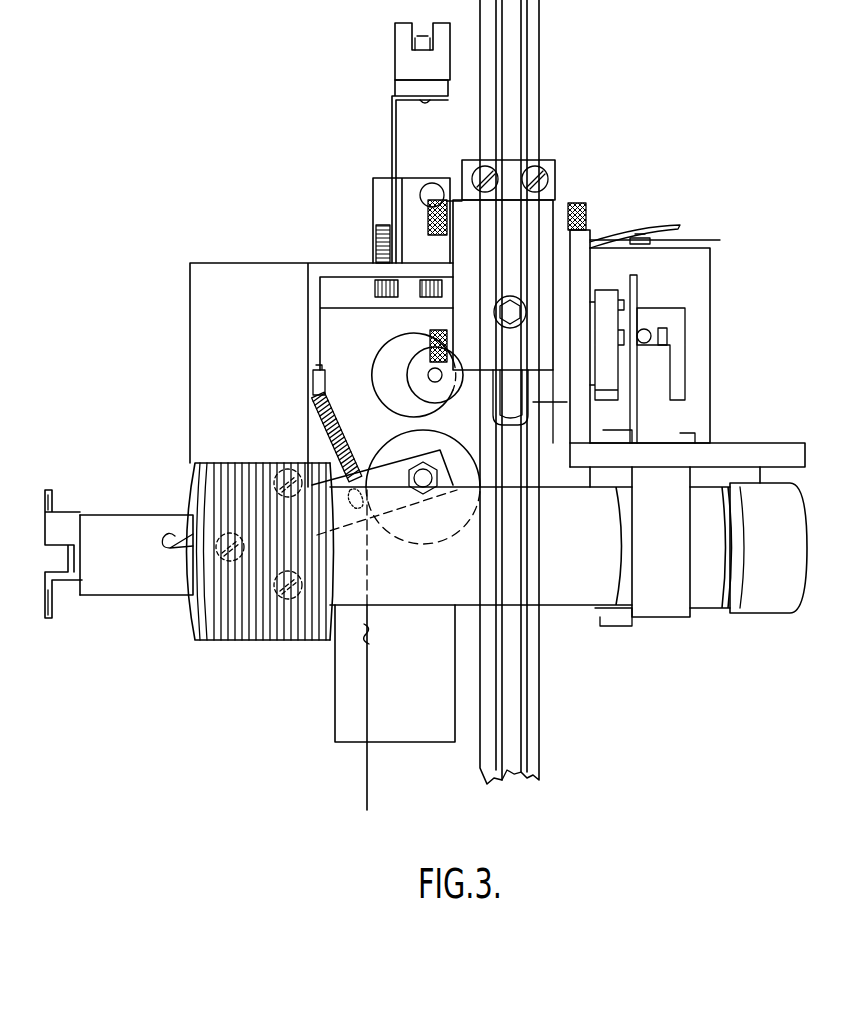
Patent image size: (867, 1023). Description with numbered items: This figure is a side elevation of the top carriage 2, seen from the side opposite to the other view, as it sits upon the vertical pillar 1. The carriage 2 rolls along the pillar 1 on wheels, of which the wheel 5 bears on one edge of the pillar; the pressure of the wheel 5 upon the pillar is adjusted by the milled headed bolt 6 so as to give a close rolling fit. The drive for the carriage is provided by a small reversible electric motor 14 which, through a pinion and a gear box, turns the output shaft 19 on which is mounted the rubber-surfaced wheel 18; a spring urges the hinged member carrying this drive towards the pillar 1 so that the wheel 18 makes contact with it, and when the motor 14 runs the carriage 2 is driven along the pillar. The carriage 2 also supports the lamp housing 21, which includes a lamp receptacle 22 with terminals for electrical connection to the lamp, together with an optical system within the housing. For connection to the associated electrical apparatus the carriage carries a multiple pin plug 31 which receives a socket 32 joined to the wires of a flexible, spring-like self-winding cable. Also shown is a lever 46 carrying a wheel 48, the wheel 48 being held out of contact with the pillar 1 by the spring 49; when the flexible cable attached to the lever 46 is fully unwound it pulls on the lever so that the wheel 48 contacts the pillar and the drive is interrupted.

The pillar 1 is at (530, 57).
The carriage 2 is at (585, 238).
The wheel 5 is at (512, 425).
The milled headed bolt 6 is at (511, 296).
The reversible electric motor 14 is at (402, 735).
The wheel 18 is at (400, 387).
The output shaft 19 is at (432, 372).
The lamp housing 21 is at (347, 597).
The lamp receptacle 22 is at (215, 630).
The multiple pin plug 31 is at (408, 88).
The socket 32 is at (408, 66).
The lever 46 is at (394, 473).
The wheel 48 is at (463, 468).
The spring 49 is at (322, 446).